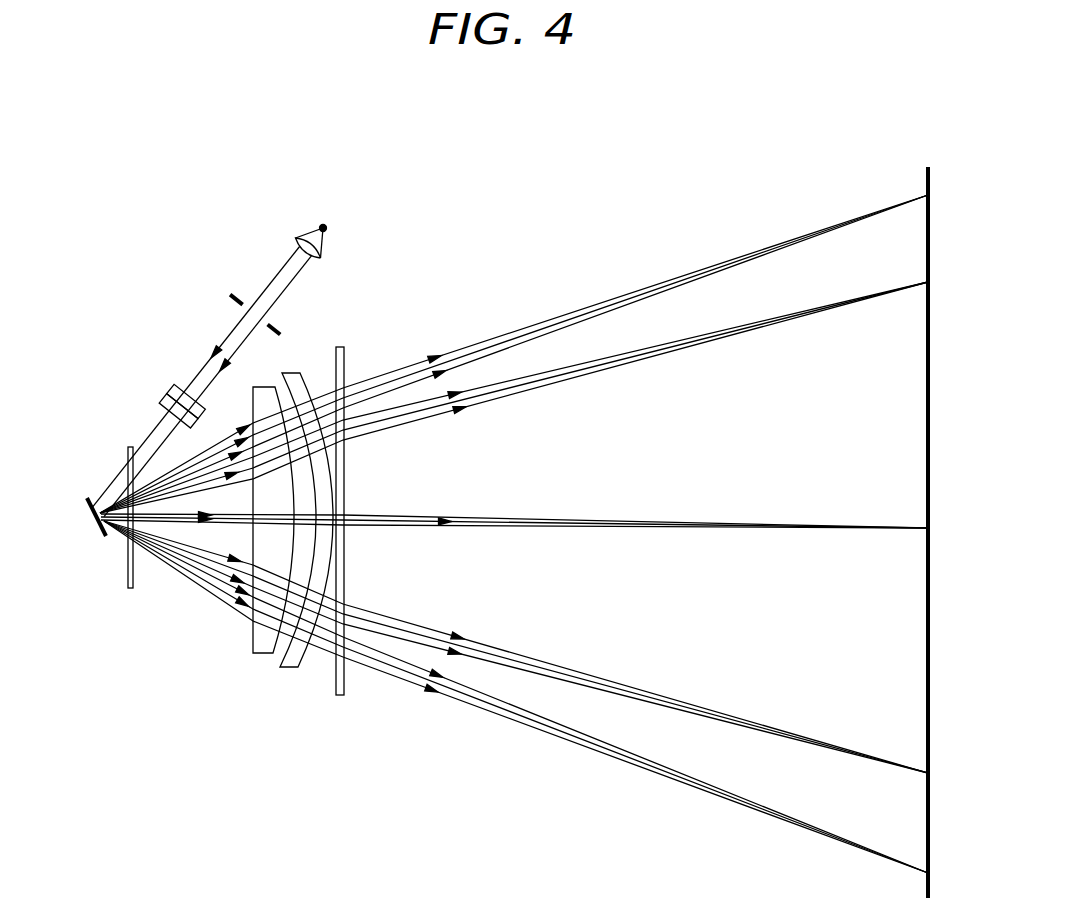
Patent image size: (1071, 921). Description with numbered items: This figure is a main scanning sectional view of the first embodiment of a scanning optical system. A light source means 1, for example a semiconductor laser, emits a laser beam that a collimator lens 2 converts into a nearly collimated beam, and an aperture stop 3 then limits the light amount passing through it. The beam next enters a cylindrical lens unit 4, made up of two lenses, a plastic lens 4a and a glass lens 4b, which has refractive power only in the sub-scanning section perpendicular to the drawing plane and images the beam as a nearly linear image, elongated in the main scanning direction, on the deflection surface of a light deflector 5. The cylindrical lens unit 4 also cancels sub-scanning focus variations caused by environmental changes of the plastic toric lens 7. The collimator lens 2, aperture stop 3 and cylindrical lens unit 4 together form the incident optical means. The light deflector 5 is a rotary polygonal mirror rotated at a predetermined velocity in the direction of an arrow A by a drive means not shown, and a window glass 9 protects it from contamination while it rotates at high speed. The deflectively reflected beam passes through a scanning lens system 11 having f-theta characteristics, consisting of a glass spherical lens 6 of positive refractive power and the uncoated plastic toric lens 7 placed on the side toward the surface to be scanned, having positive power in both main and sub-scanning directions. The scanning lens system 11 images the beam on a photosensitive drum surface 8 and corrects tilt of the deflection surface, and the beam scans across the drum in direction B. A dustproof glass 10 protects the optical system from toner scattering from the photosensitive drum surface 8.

The light source means 1 is at (320, 224).
The collimator lens 2 is at (297, 245).
The aperture stop 3 is at (229, 293).
The cylindrical lens unit 4 is at (152, 378).
The plastic lens 4a is at (172, 389).
The glass lens 4b is at (156, 397).
The light deflector 5 is at (104, 540).
The spherical lens 6 is at (262, 658).
The toric lens 7 is at (291, 672).
The photosensitive drum surface 8 is at (926, 173).
The window glass 9 is at (130, 592).
The dustproof glass 10 is at (339, 698).
The scanning lens system 11 is at (281, 572).
The direction of rotation of light deflector A is at (79, 533).
The scanning direction B is at (906, 422).